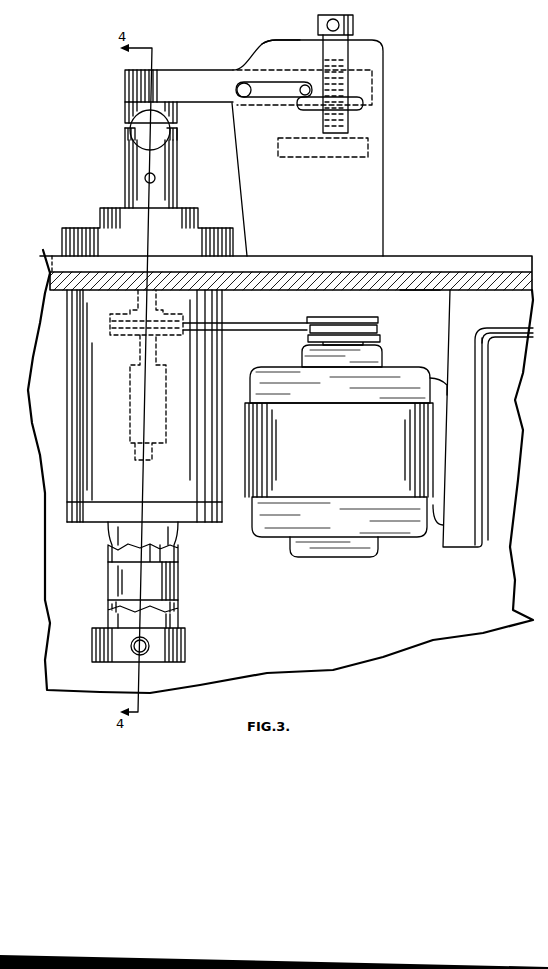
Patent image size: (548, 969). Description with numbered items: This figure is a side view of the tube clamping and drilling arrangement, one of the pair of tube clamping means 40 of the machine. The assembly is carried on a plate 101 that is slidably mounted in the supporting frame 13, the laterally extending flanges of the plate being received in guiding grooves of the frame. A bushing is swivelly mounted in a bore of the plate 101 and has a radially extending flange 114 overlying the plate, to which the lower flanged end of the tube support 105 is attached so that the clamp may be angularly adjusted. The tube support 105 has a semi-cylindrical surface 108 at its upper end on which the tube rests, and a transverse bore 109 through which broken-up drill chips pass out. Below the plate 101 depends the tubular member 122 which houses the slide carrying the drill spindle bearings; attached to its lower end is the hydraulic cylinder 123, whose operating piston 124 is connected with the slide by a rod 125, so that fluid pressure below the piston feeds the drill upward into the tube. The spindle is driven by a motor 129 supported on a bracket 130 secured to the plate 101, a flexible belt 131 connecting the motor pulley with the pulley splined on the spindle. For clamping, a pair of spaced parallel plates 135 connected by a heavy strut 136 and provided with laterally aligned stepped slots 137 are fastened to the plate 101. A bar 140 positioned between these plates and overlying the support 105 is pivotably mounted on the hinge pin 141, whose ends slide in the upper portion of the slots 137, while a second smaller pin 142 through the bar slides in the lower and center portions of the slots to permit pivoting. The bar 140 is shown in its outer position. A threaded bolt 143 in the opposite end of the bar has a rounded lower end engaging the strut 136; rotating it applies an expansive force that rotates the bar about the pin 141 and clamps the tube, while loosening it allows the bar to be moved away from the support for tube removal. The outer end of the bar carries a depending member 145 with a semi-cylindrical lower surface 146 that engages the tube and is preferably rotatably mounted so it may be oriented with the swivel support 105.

The tube clamp and drill supporting frame 13 is at (477, 268).
The tube clamping means 40 is at (214, 58).
The plate 101 is at (418, 292).
The tube support 105 is at (123, 164).
The semi-cylindrical surface 108 is at (123, 133).
The transverse bore 109 is at (156, 178).
The radially extending flange 114 is at (233, 242).
The tubular member 122 is at (144, 426).
The hydraulic cylinder 123 is at (172, 618).
The operating piston 124 is at (168, 583).
The rod 125 is at (178, 552).
The motor 129 is at (343, 545).
The bracket 130 is at (470, 548).
The flexible belt 131 is at (258, 322).
The spaced parallel plates 135 is at (383, 208).
The heavy strut 136 is at (368, 146).
The stepped slots 137 is at (265, 87).
The bar 140 is at (123, 79).
The hinge pin 141 is at (238, 92).
The second smaller pin 142 is at (297, 107).
The threaded bolt 143 is at (355, 28).
The depending member 145 is at (123, 108).
The semi-cylindrical lower surface 146 is at (150, 130).